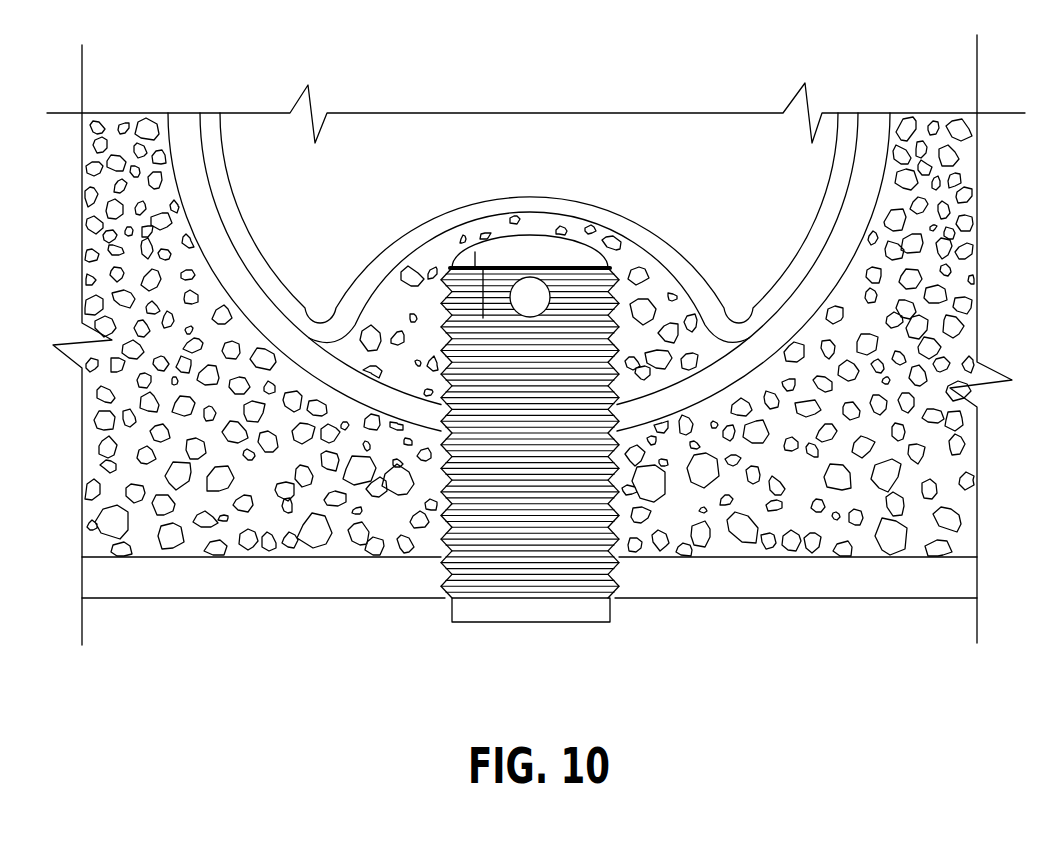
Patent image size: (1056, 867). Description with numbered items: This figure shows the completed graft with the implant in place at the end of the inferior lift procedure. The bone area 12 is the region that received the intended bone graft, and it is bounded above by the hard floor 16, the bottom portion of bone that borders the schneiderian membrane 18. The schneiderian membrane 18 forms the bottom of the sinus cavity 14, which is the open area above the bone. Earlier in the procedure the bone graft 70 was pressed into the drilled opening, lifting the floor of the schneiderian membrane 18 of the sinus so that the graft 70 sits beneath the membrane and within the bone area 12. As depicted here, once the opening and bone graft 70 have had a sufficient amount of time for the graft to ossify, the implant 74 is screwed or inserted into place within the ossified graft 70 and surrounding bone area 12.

The bone area 12 is at (839, 326).
The sinus cavity 14 is at (548, 157).
The hard floor 16 is at (852, 232).
The schneiderian membrane 18 is at (388, 250).
The bone graft 70 is at (637, 270).
The implant 74 is at (515, 613).